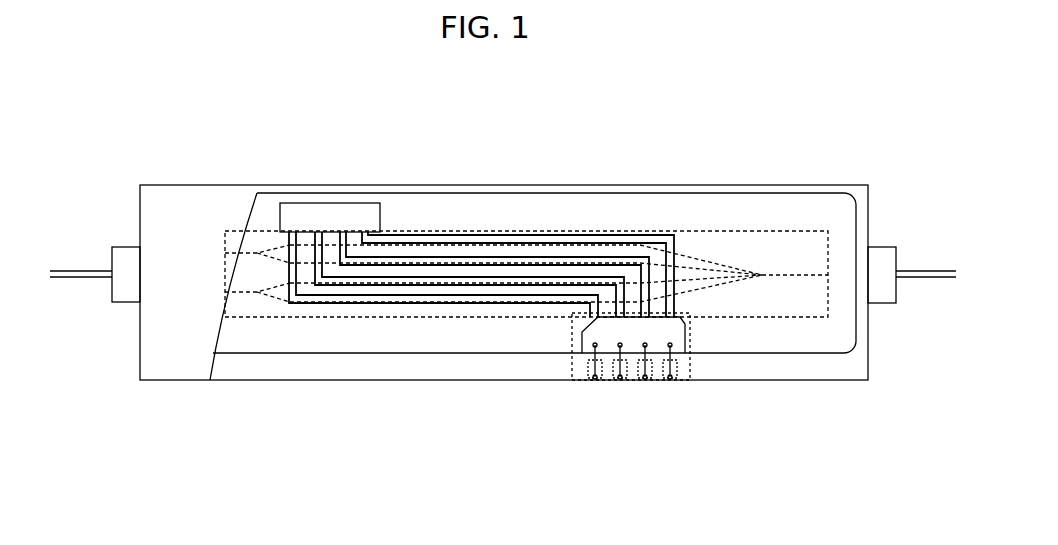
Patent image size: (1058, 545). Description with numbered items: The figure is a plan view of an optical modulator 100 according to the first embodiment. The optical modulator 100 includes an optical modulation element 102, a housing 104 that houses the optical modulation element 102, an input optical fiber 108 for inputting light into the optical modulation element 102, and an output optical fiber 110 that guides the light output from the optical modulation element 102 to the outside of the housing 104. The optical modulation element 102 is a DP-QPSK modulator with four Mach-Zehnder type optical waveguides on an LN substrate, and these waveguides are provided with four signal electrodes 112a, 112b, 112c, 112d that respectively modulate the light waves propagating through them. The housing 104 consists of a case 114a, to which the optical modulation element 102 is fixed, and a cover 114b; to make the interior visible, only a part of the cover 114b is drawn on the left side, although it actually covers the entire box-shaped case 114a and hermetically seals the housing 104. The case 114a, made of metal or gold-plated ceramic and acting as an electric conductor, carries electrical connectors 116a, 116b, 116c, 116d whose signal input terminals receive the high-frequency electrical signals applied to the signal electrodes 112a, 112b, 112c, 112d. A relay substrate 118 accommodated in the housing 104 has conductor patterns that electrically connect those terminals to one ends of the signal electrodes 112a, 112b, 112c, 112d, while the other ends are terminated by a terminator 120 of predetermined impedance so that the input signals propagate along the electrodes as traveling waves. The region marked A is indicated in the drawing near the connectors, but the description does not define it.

The optical modulator 100 is at (180, 103).
The optical modulation element 102 is at (526, 215).
The housing 104 is at (343, 72).
The input optical fiber 108 is at (912, 234).
The output optical fiber 110 is at (91, 233).
The signal electrode 112a is at (577, 290).
The signal electrode 112b is at (578, 309).
The signal electrode 112c is at (469, 308).
The signal electrode 112d is at (443, 290).
The case 114a is at (534, 227).
The cover 114b is at (271, 224).
The electrical connector 116a is at (659, 412).
The electrical connector 116b is at (616, 419).
The electrical connector 116c is at (577, 404).
The electrical connector 116d is at (557, 388).
The relay substrate 118 is at (556, 376).
The terminator 120 is at (348, 174).
The region A is at (687, 370).